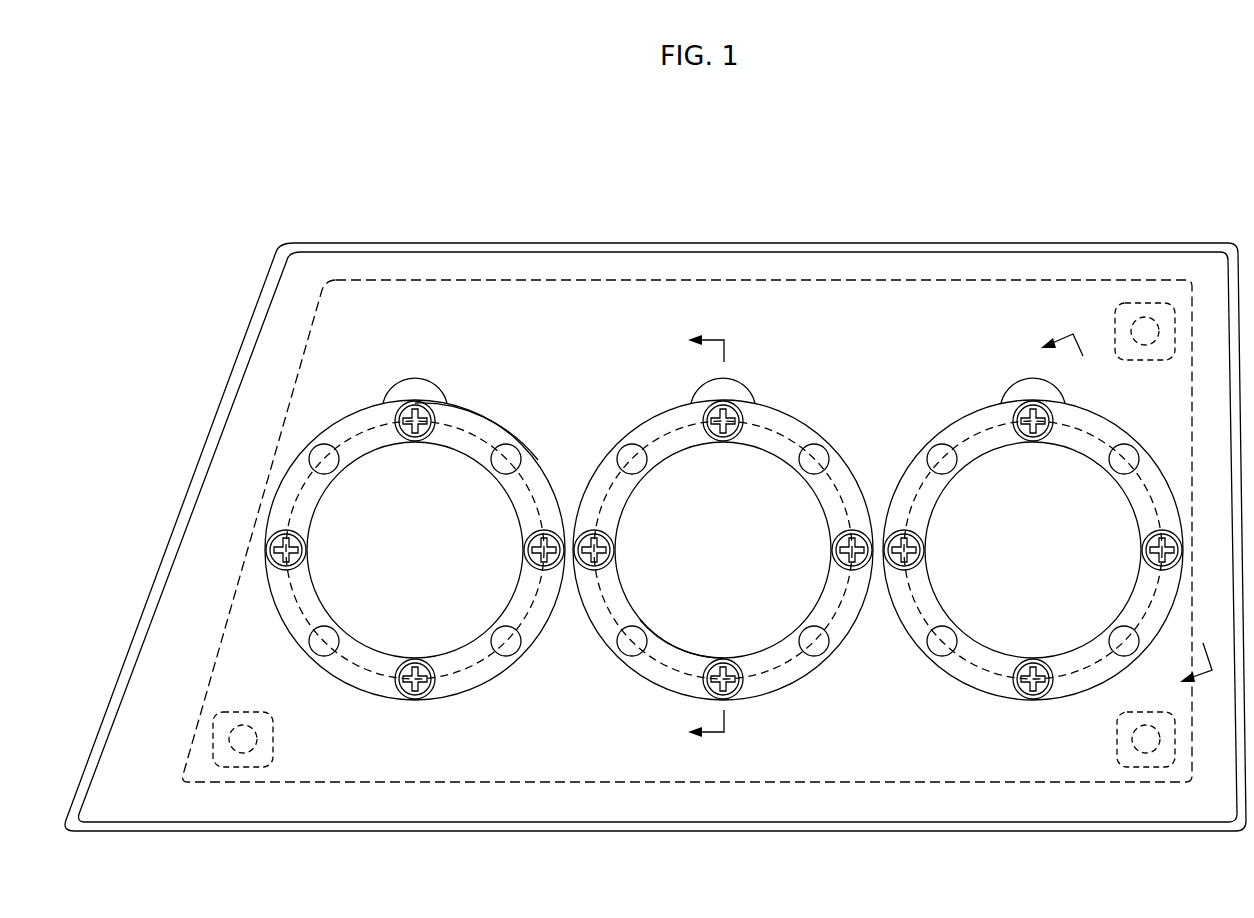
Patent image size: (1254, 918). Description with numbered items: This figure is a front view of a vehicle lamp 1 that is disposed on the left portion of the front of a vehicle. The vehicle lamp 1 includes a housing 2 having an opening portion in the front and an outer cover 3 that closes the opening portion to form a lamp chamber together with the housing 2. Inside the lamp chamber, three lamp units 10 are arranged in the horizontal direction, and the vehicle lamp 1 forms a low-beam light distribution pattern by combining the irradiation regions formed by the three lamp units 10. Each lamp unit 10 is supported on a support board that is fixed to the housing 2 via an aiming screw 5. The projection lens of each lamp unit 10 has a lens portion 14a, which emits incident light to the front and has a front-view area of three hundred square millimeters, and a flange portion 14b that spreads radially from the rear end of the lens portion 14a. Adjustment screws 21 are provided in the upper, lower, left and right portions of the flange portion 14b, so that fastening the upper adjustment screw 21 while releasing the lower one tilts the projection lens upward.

The vehicle lamp 1 is at (655, 491).
The housing 2 is at (655, 512).
The outer cover 3 is at (1080, 243).
The aiming screw 5 is at (1118, 742).
The lamp unit 10 is at (724, 541).
The lens portion 14a is at (692, 615).
The flange portion 14b is at (660, 430).
The adjustment screw 21 is at (746, 416).